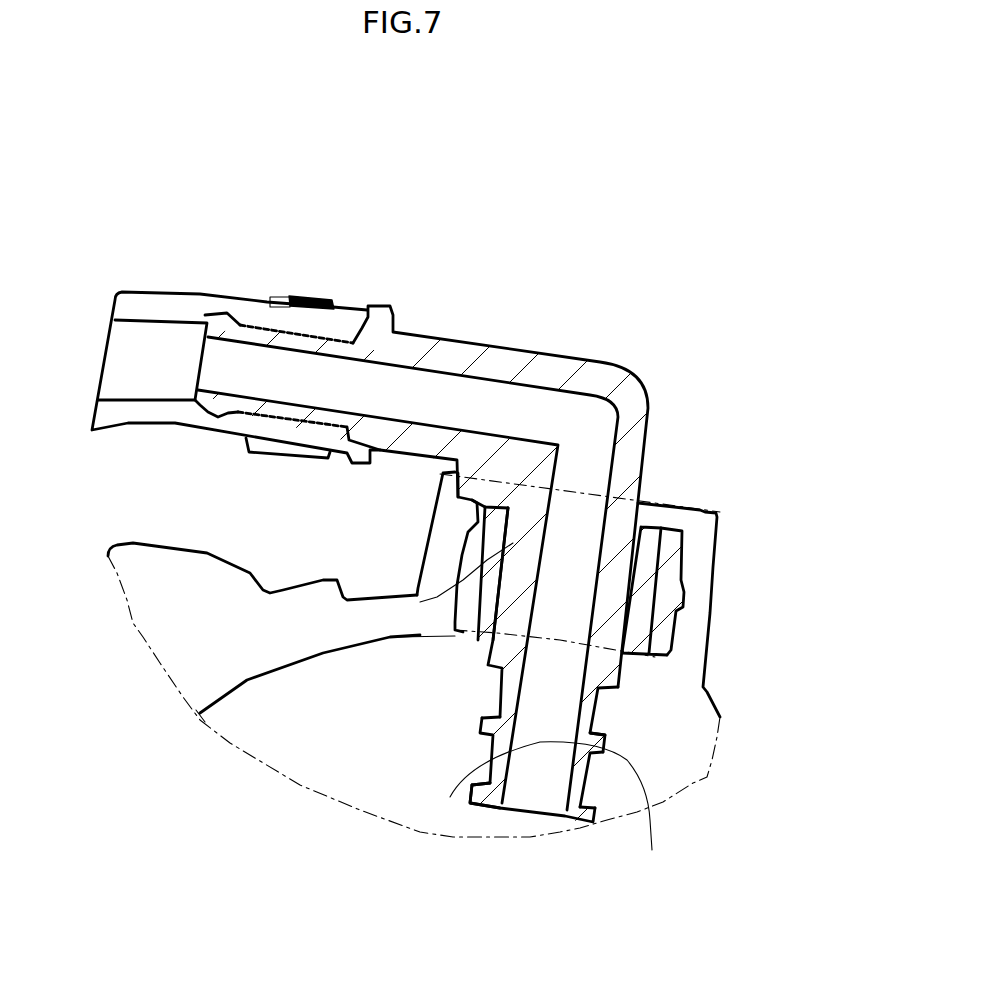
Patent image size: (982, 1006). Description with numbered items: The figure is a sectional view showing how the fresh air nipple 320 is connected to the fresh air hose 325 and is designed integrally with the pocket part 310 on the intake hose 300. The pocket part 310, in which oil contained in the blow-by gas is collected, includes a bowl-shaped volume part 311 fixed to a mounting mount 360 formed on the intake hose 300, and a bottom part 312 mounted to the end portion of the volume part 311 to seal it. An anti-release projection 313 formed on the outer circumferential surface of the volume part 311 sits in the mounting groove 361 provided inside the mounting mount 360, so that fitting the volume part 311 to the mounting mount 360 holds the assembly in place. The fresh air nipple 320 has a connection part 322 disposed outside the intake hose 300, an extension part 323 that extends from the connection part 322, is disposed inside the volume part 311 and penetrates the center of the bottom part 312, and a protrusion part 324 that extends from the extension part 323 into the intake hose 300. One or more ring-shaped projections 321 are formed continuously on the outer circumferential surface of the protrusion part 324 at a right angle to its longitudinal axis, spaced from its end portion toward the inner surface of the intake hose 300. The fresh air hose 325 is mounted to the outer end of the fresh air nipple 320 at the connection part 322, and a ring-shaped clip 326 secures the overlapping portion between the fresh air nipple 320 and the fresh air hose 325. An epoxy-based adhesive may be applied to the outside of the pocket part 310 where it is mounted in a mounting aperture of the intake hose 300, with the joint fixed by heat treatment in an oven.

The intake hose 300 is at (173, 620).
The pocket part 310 is at (541, 424).
The volume part 311 is at (701, 546).
The bottom part 312 is at (655, 521).
The anti-release projection 313 is at (674, 613).
The fresh air nipple 320 is at (547, 820).
The projection 321 is at (603, 743).
The connection part 322 is at (525, 367).
The extension part 323 is at (508, 606).
The protrusion part 324 is at (466, 790).
The fresh air hose 325 is at (163, 303).
The ring-shaped clip 326 is at (340, 303).
The mounting mount 360 is at (440, 545).
The mounting groove 361 is at (452, 585).